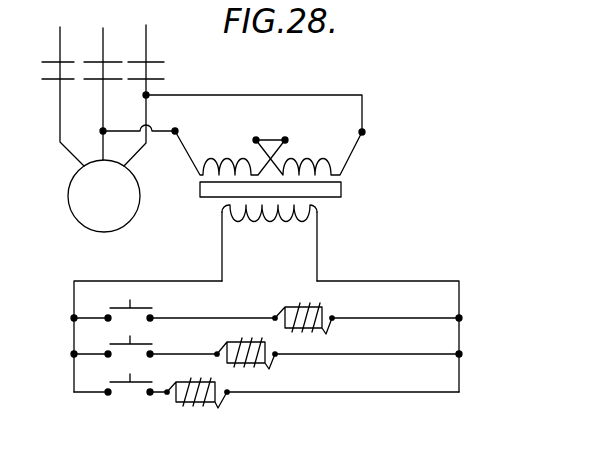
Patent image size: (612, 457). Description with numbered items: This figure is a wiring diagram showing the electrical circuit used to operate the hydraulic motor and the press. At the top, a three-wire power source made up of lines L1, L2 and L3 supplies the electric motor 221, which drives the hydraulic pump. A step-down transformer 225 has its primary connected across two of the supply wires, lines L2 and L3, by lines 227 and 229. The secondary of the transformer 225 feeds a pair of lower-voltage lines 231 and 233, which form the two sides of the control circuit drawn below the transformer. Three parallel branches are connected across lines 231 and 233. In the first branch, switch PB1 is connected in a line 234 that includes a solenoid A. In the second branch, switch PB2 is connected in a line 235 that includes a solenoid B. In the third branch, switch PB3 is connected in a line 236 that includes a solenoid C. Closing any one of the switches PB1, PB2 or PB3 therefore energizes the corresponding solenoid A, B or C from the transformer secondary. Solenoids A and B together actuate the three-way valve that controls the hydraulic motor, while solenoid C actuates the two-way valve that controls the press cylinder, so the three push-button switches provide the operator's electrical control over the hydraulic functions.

The electric motor 221 is at (68, 201).
The step-down transformer 225 is at (351, 179).
The line 227 is at (162, 131).
The line 229 is at (210, 95).
The line 231 is at (221, 237).
The line 233 is at (318, 232).
The line 234 is at (210, 318).
The line 235 is at (357, 355).
The line 236 is at (303, 392).
The line L1 is at (60, 38).
The line L2 is at (103, 38).
The line L3 is at (146, 35).
The switch PB1 is at (106, 313).
The switch PB2 is at (106, 350).
The switch PB3 is at (106, 388).
The solenoid A is at (318, 309).
The solenoid B is at (253, 344).
The solenoid C is at (204, 383).